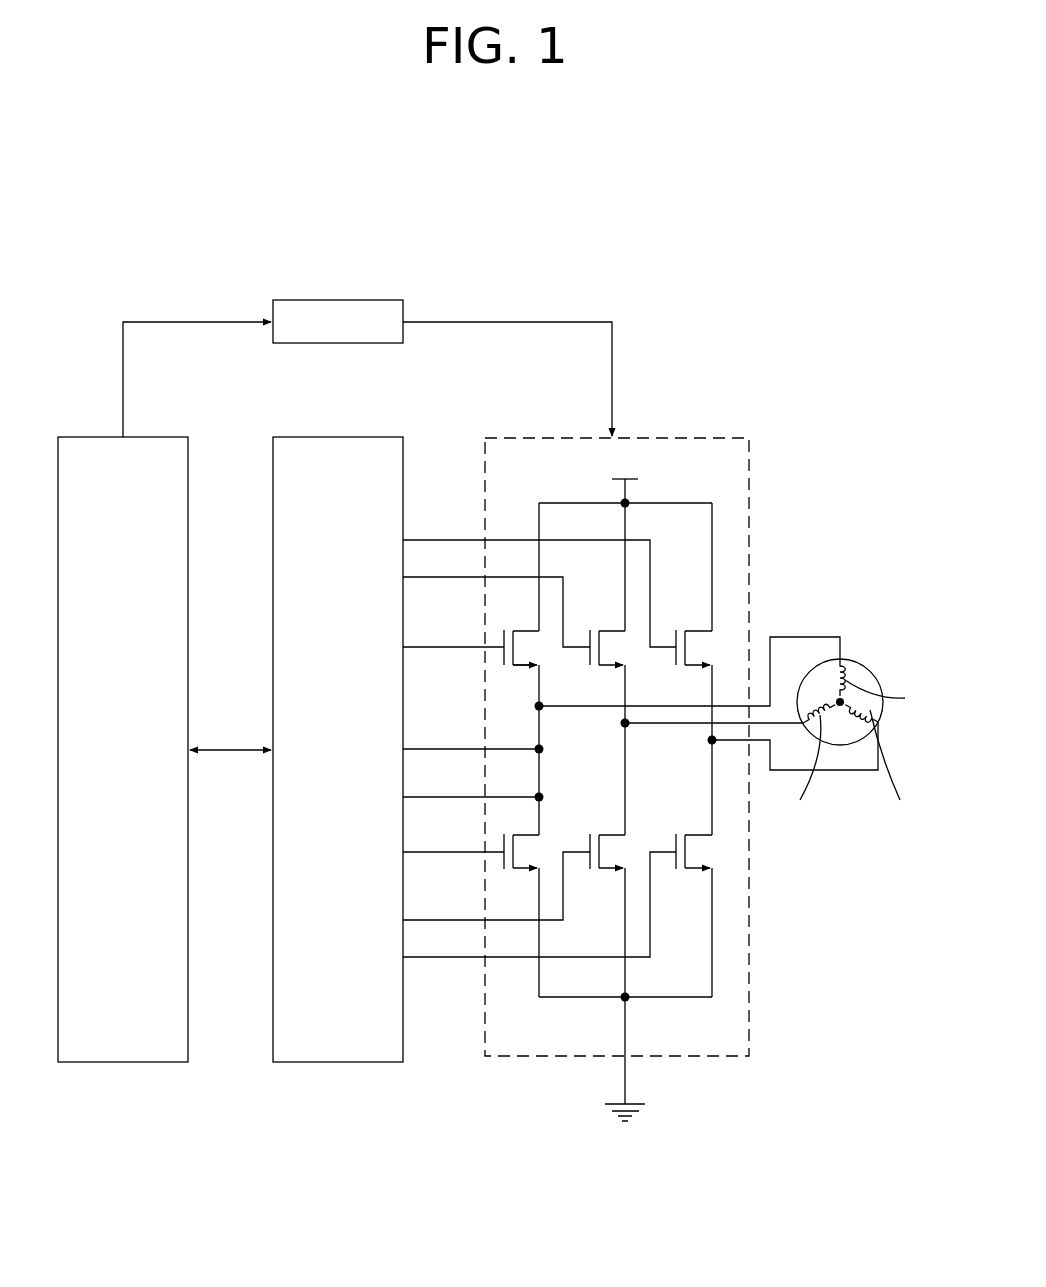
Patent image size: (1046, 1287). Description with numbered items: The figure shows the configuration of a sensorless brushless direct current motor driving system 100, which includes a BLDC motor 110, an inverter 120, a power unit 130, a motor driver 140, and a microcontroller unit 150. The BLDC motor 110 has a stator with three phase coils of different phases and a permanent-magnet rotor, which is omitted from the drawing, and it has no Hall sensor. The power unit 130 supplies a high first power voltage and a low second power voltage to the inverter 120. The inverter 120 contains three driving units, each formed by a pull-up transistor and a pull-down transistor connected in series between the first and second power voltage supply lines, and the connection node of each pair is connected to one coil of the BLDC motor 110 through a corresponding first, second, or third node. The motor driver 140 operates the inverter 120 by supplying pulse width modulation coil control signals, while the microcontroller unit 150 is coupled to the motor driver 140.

The sensorless BLDC motor driving system 100 is at (92, 237).
The BLDC motor 110 is at (866, 660).
The inverter 120 is at (740, 438).
The power unit 130 is at (393, 298).
The motor driver 140 is at (397, 437).
The microcontroller unit (MCU) 150 is at (181, 437).